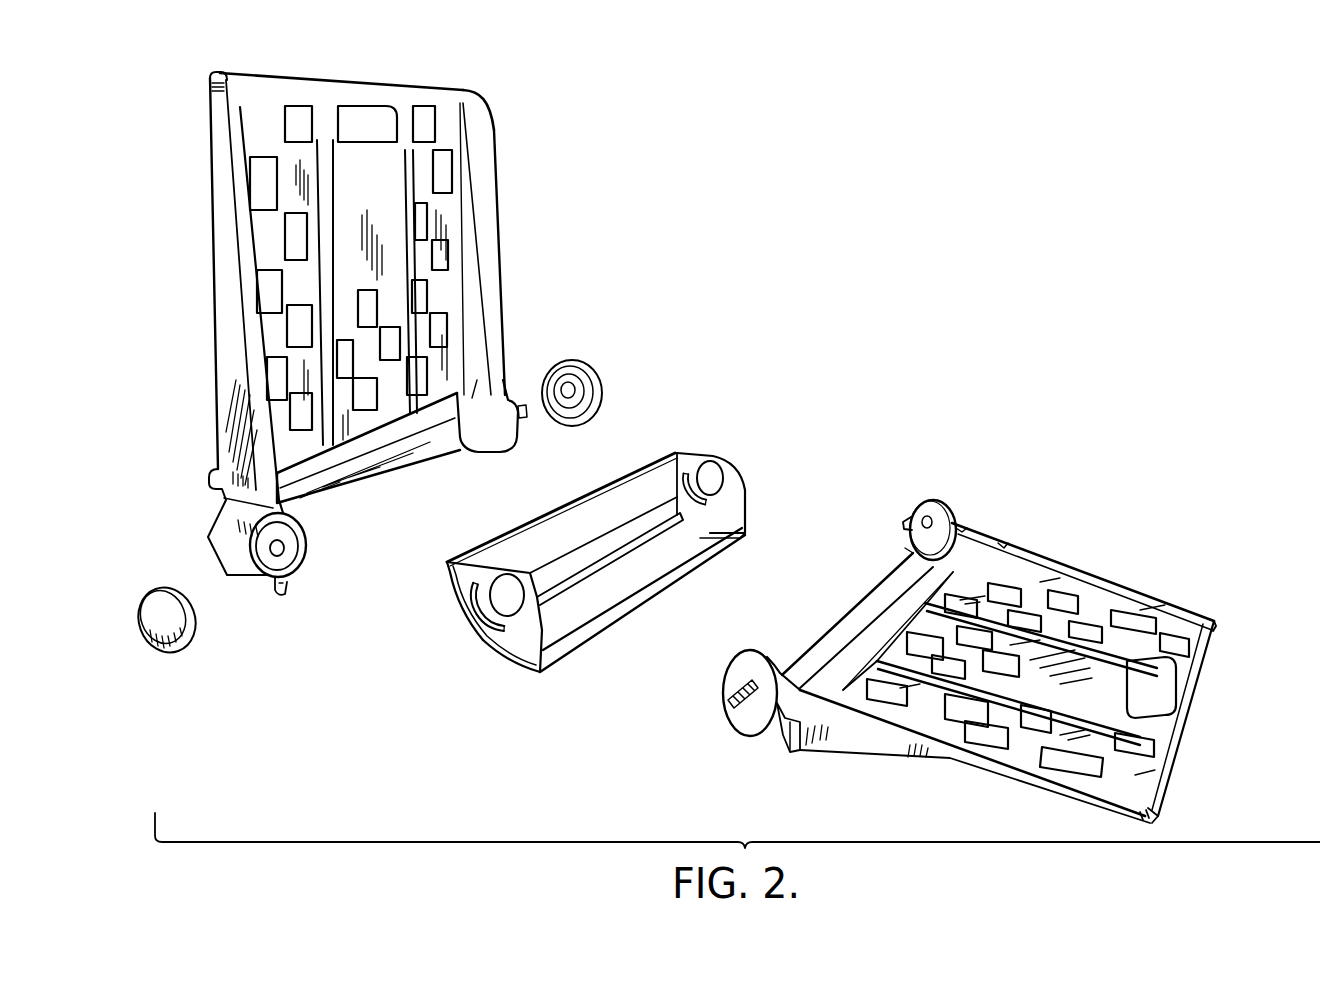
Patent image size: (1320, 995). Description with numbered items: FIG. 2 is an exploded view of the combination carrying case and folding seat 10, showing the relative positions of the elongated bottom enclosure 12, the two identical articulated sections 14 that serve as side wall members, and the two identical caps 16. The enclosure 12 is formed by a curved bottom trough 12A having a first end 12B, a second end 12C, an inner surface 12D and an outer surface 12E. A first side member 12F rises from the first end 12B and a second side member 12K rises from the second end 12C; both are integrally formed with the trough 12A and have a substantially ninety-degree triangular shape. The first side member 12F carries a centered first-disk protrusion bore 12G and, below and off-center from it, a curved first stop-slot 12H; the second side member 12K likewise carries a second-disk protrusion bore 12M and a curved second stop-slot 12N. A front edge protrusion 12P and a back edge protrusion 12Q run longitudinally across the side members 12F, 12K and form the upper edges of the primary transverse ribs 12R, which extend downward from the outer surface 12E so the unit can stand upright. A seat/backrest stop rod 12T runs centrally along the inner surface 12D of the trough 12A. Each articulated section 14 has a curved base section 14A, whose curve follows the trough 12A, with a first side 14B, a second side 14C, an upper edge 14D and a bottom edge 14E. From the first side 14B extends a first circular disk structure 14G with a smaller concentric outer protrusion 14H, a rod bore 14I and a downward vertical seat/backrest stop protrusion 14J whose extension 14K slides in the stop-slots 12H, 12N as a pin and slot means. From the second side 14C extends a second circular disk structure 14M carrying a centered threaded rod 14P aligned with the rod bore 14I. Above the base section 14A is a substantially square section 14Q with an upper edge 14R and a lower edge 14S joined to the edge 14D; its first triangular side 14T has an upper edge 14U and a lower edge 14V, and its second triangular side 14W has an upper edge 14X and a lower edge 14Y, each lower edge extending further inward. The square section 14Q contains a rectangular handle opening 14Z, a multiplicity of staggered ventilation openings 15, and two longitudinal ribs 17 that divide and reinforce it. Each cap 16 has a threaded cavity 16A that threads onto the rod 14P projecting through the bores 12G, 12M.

The combination carrying case and folding seat 10 is at (985, 338).
The elongated bottom enclosure 12 is at (720, 430).
The curved bottom trough 12A is at (572, 627).
The first end 12B is at (573, 640).
The second end 12C is at (745, 525).
The inner surface 12D is at (622, 497).
The outer surface 12E is at (500, 660).
The first side member 12F is at (495, 597).
The first-disk protrusion bore 12G is at (470, 637).
The first stop-slot 12H is at (482, 652).
The second side member 12K is at (705, 457).
The second-disk protrusion bore 12M is at (740, 470).
The second stop-slot 12N is at (720, 505).
The front edge protrusion 12P is at (535, 668).
The back edge protrusion 12Q is at (449, 566).
The primary transverse ribs 12R is at (522, 672).
The seat/backrest stop rod 12T is at (610, 567).
The articulated section 14 is at (522, 100).
The curved base section 14A is at (323, 515).
The first side 14B is at (230, 507).
The second side 14C is at (497, 403).
The upper edge 14D is at (393, 430).
The bottom edge 14E is at (505, 516).
The first circular disk structure 14G is at (253, 522).
The concentric outer protrusion 14H is at (248, 538).
The rod bore 14I is at (284, 553).
The seat/backrest stop protrusion 14J is at (285, 593).
The extension 14K is at (626, 533).
The second circular disk structure 14M is at (750, 717).
The threaded rod 14P is at (528, 416).
The square section 14Q is at (450, 138).
The upper edge 14R is at (356, 83).
The lower edge 14S is at (616, 554).
The first triangular side 14T is at (222, 362).
The upper edge 14U is at (211, 78).
The lower edge 14V is at (242, 465).
The second triangular side 14W is at (493, 252).
The upper edge 14X is at (473, 94).
The lower edge 14Y is at (797, 752).
The handle opening 14Z is at (367, 117).
The staggered openings 15 is at (443, 181).
The cap 16 is at (603, 374).
The threaded cavity 16A is at (585, 398).
The longitudinal ribs 17 is at (317, 188).